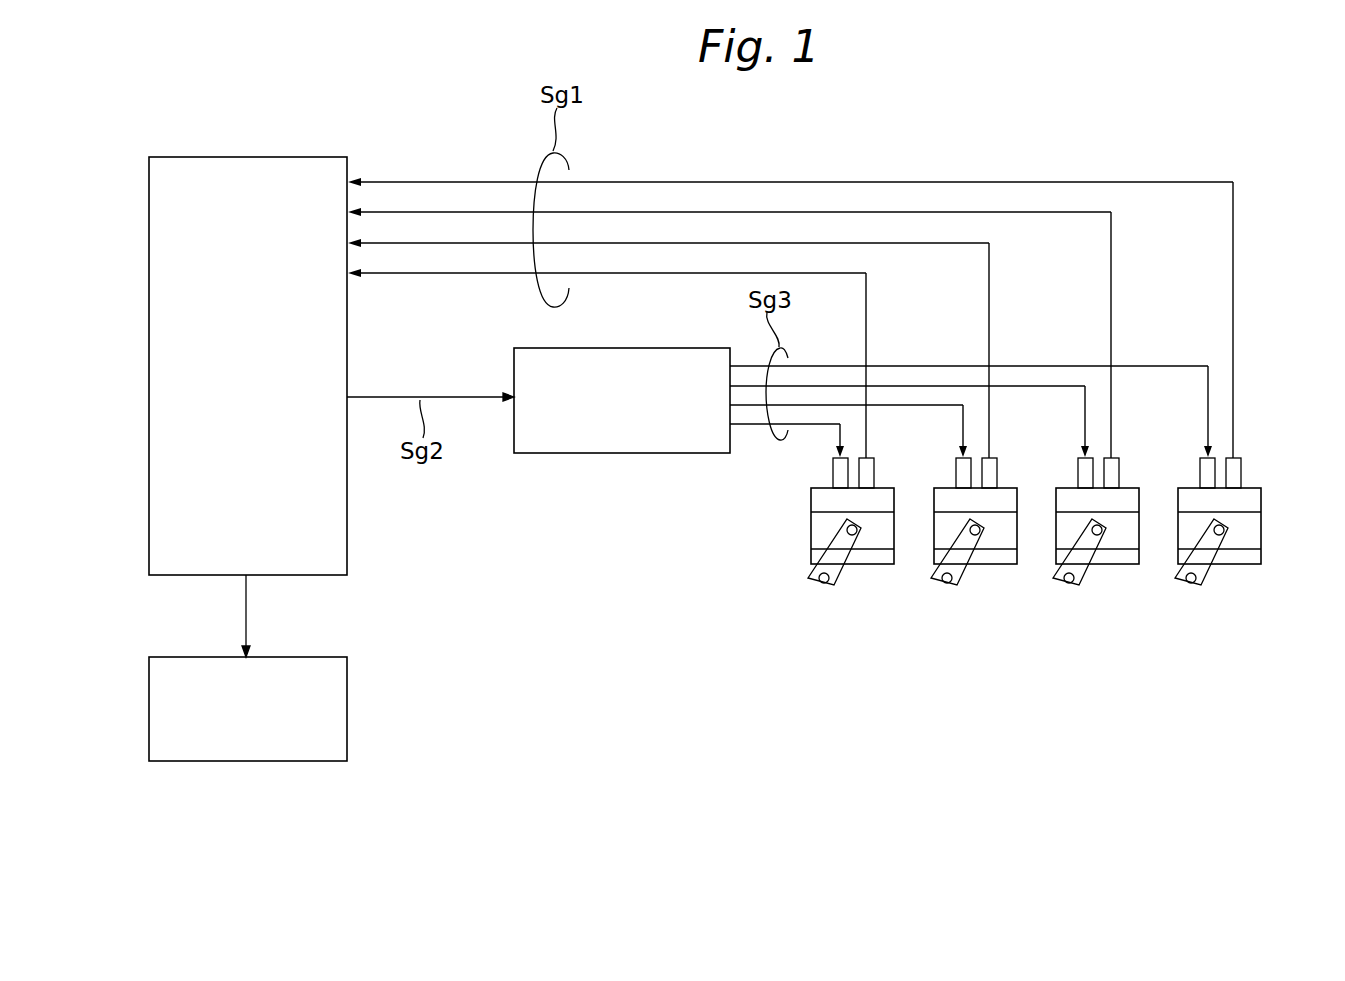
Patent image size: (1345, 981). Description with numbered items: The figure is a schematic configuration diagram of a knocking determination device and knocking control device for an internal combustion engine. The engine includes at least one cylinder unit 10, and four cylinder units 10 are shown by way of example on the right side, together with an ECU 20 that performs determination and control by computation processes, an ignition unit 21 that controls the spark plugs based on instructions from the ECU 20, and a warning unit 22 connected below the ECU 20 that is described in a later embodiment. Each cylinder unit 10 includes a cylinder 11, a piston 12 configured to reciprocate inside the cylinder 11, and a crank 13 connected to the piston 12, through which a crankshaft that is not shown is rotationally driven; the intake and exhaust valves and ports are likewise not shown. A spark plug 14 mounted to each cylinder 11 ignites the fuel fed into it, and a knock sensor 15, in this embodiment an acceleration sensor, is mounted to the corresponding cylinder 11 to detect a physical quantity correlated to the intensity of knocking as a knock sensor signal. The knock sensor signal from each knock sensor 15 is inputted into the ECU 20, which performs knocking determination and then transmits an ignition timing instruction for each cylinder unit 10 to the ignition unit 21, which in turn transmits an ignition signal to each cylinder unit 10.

The cylinder unit 10 is at (851, 612).
The cylinder 11 is at (1047, 540).
The piston 12 is at (1039, 567).
The crank 13 is at (1014, 590).
The spark plug 14 is at (994, 471).
The knock sensor 15 is at (1087, 457).
The ECU 20 is at (262, 386).
The ignition unit 21 is at (638, 411).
The warning unit 22 is at (262, 722).